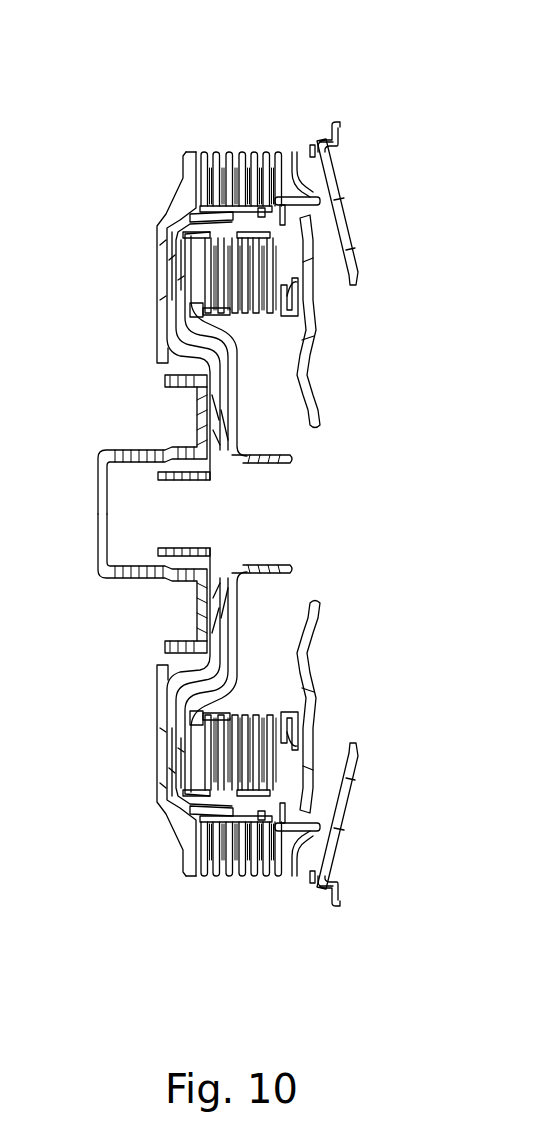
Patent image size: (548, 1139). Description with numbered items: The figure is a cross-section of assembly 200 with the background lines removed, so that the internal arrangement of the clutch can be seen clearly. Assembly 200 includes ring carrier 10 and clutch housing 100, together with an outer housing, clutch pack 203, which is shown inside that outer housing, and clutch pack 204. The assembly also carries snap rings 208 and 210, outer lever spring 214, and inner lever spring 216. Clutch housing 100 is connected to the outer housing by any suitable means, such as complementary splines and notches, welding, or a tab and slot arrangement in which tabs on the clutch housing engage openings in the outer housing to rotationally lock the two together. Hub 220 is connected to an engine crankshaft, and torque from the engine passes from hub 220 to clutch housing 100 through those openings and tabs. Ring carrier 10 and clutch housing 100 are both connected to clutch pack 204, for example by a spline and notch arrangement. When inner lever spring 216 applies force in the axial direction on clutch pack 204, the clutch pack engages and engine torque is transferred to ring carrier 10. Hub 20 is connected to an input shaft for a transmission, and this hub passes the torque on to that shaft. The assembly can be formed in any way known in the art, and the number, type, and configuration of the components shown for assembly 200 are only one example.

The assembly 200 is at (122, 99).
The clutch pack 203 is at (208, 132).
The snap ring 210 is at (313, 141).
The outer lever spring 214 is at (347, 230).
The ring carrier 10 is at (180, 288).
The snap ring 208 is at (195, 310).
The hub 220 is at (120, 452).
The clutch pack 204 is at (258, 332).
The clutch housing 100 is at (293, 297).
The inner lever spring 216 is at (305, 350).
The hub 20 is at (280, 463).